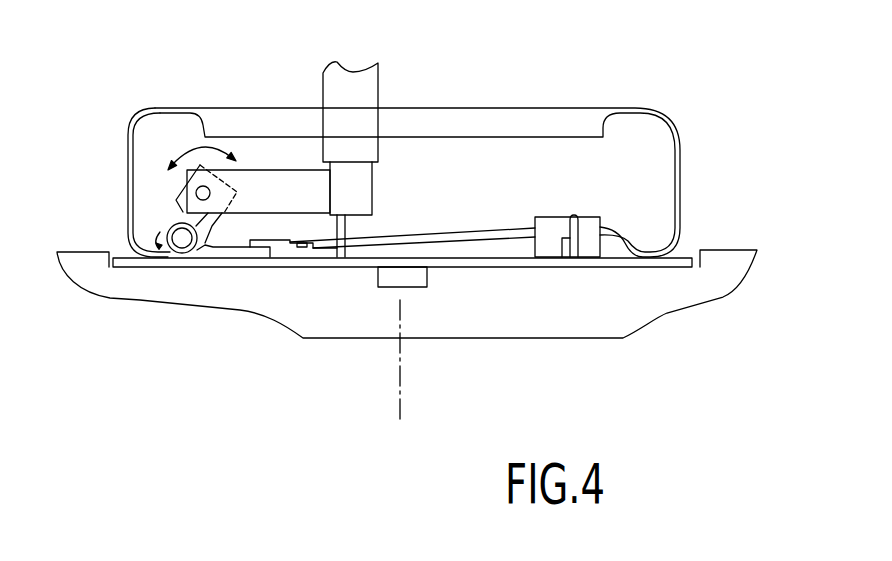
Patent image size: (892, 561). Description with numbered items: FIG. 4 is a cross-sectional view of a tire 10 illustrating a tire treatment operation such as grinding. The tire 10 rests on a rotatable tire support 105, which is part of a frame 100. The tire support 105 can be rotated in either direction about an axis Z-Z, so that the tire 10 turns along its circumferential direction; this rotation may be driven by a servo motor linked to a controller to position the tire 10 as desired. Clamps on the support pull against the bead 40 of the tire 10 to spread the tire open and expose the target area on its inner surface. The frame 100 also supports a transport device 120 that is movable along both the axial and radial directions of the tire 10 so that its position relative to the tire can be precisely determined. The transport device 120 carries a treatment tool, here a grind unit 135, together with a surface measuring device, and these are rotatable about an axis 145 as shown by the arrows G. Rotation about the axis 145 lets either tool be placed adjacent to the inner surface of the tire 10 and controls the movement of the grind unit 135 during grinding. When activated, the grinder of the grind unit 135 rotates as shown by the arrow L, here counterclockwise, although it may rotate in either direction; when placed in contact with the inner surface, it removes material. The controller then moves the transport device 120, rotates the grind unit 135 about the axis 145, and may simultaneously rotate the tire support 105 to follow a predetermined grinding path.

The tire 10 is at (528, 123).
The transport device 120 is at (368, 85).
The axis 145 is at (204, 193).
The grind unit 135 is at (182, 238).
The bead 40 is at (463, 237).
The tire support 105 is at (688, 257).
The frame 100 is at (650, 312).
The arrows G is at (190, 150).
The arrow L is at (165, 233).
The axis Z- Z is at (400, 400).